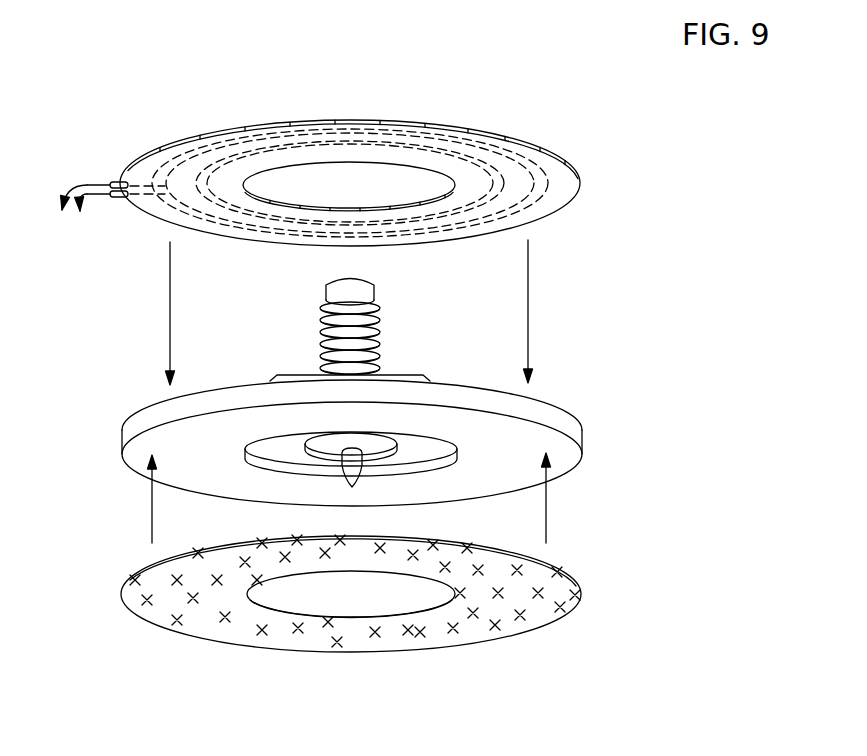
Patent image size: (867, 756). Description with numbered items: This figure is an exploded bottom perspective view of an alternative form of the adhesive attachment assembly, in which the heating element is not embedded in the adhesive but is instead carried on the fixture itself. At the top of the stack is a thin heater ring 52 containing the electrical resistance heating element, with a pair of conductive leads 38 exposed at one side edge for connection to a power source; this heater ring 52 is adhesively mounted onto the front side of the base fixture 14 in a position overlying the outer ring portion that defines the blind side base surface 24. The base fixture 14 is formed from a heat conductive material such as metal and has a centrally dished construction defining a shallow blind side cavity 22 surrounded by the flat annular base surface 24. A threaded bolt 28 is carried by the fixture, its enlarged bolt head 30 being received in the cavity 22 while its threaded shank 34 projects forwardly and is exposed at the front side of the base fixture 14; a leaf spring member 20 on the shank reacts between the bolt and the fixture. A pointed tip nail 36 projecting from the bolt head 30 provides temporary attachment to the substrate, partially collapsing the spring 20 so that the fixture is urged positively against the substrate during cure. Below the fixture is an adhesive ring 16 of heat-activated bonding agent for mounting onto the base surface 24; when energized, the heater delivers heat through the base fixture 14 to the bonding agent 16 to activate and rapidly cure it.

The base fixture 14 is at (366, 303).
The adhesive bonding agent 16 is at (538, 627).
The spring member 20 is at (397, 375).
The blind side cavity 22 is at (432, 460).
The annular base surface 24 is at (406, 430).
The threaded bolt 28 is at (361, 316).
The bolt head 30 is at (317, 437).
The threaded shank 34 is at (323, 328).
The pointed tip nail 36 is at (357, 472).
The conductive leads 38 is at (110, 190).
The heater ring 52 is at (468, 132).